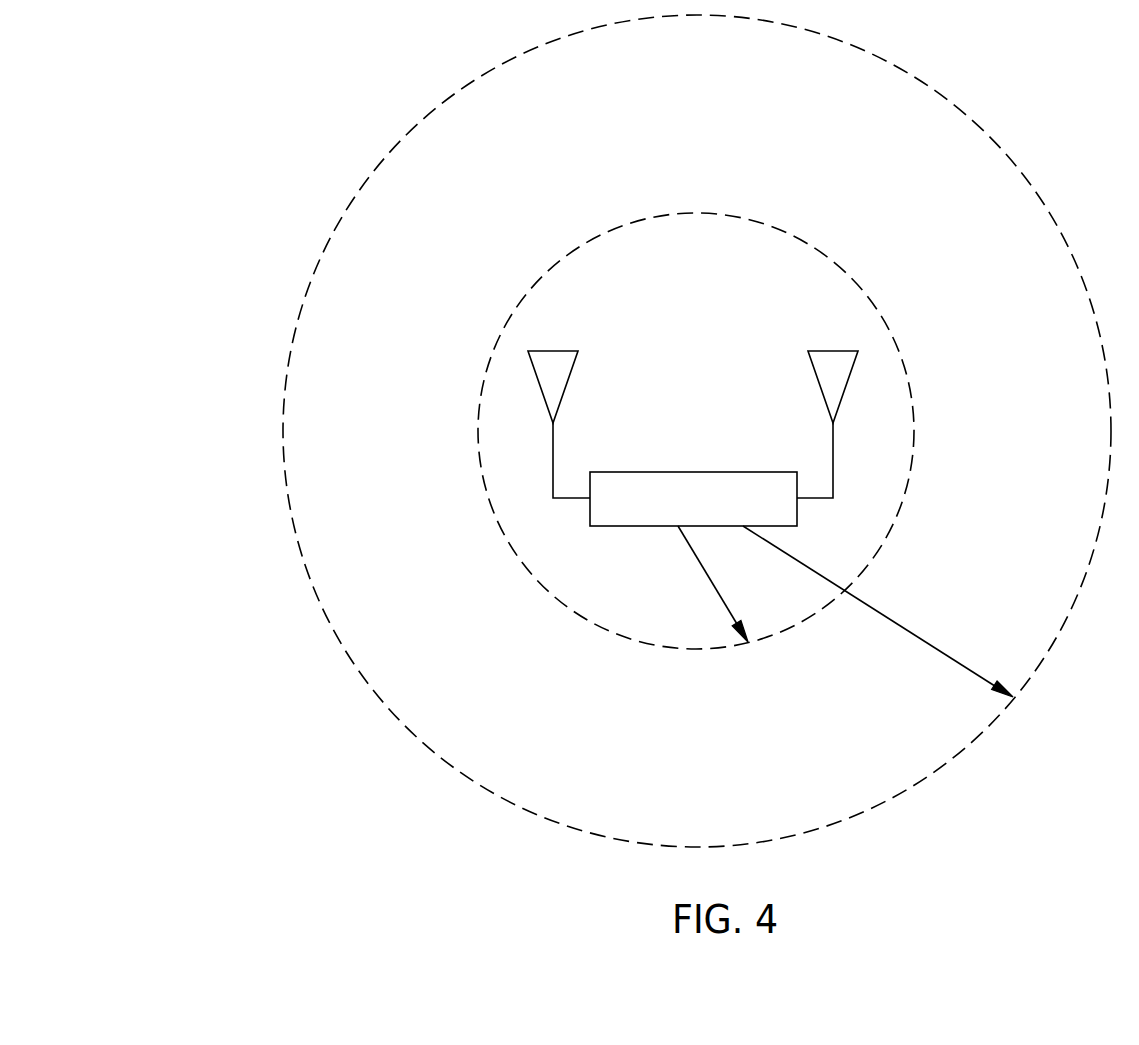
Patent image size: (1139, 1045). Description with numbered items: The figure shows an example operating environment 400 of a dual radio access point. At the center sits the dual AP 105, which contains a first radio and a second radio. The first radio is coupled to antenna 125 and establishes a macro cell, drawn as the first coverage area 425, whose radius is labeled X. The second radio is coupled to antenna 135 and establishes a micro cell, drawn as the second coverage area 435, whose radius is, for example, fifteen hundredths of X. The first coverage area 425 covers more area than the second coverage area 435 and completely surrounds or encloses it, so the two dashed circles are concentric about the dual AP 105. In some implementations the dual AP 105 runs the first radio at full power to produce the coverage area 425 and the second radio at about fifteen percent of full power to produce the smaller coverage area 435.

The wireless network environment 400 is at (286, 66).
The first coverage area 425 is at (945, 100).
The second coverage area 435 is at (757, 222).
The antenna 125 is at (571, 372).
The antenna 135 is at (816, 373).
The dual AP 105 is at (636, 527).